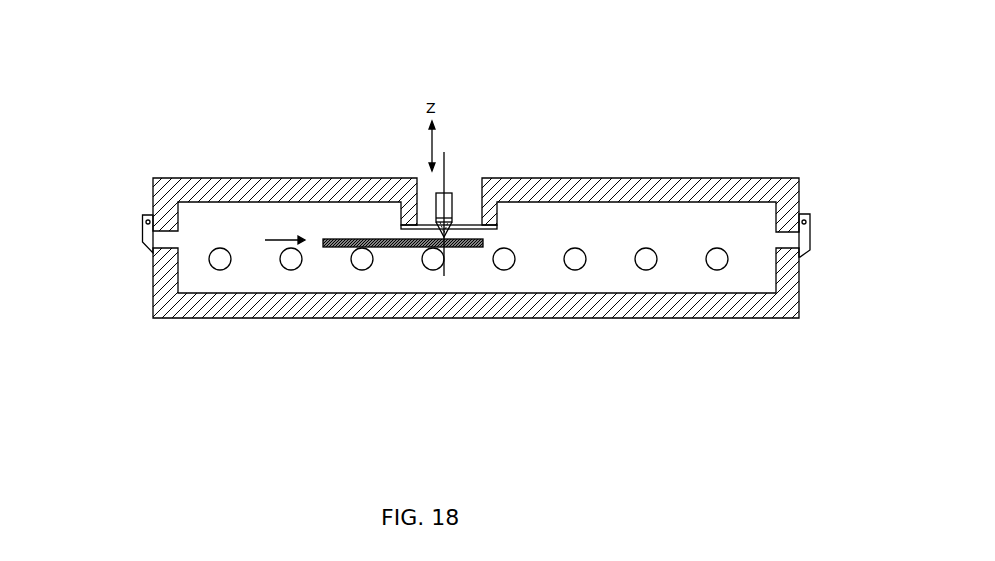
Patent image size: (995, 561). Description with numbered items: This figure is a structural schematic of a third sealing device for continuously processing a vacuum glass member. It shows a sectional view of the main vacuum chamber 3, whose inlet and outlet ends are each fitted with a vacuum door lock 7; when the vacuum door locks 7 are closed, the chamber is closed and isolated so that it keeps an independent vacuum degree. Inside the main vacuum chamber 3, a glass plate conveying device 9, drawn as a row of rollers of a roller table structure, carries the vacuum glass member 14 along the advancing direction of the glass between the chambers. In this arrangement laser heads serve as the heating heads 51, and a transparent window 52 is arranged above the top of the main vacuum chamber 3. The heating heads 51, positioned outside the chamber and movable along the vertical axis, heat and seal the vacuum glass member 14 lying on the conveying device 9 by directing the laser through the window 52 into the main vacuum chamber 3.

The main vacuum chamber 3 is at (265, 307).
The vacuum door lock 7 is at (144, 242).
The glass plate conveying device 9 is at (433, 262).
The vacuum glass member 14 is at (380, 240).
The heating head 51 is at (447, 193).
The transparent window 52 is at (471, 228).